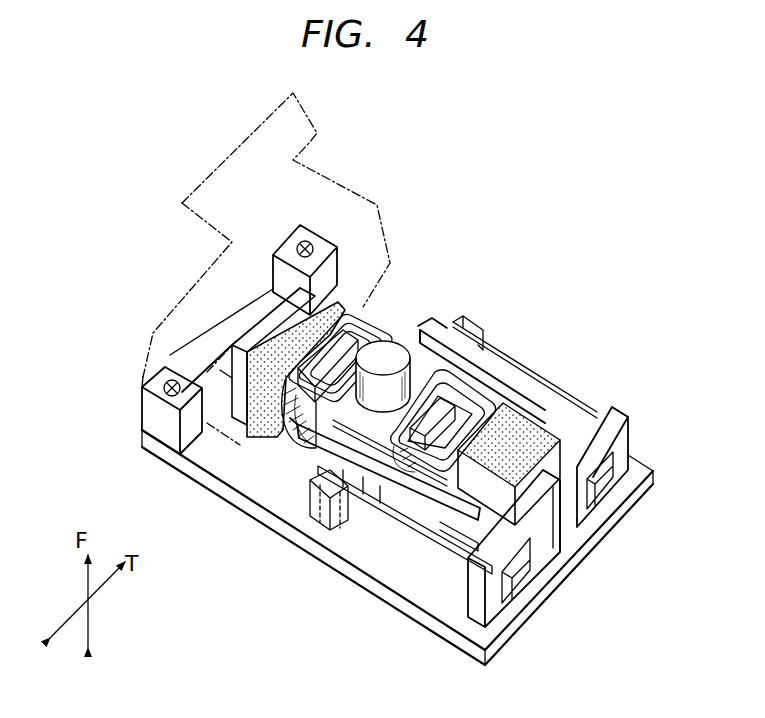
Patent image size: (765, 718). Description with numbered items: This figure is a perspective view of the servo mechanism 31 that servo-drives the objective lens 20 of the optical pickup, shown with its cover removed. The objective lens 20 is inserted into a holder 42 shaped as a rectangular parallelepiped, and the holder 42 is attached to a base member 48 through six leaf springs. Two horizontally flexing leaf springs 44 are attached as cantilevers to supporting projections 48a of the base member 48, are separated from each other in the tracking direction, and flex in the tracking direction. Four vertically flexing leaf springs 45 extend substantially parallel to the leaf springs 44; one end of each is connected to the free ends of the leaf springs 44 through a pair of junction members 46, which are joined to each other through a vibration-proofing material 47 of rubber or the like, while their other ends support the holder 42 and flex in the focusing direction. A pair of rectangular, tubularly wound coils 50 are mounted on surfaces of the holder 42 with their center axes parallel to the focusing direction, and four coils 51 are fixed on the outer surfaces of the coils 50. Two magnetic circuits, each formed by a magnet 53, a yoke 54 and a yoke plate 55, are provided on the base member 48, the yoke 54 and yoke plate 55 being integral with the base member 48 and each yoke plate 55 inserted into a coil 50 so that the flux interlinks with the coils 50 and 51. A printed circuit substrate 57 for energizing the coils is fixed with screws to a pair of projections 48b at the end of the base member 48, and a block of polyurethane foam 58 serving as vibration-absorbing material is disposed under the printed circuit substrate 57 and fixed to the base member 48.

The servo mechanism 31 is at (103, 247).
The objective lens 20 is at (390, 350).
The holder 42 is at (425, 360).
The horizontally flexing leaf springs 44 is at (500, 357).
The vertically flexing leaf springs 45 is at (632, 412).
The junction members 46 is at (617, 483).
The vibration-proofing material 47 is at (572, 508).
The base member 48 is at (230, 470).
The supporting projections 48a is at (470, 333).
The projections 48b is at (162, 433).
The coils 50 is at (303, 430).
The coils 51 is at (363, 310).
The magnet 53 is at (240, 293).
The yoke 54 is at (250, 340).
The yoke plate 55 is at (378, 325).
The printed circuit substrate 57 is at (175, 325).
The polyurethane foam 58 is at (153, 350).